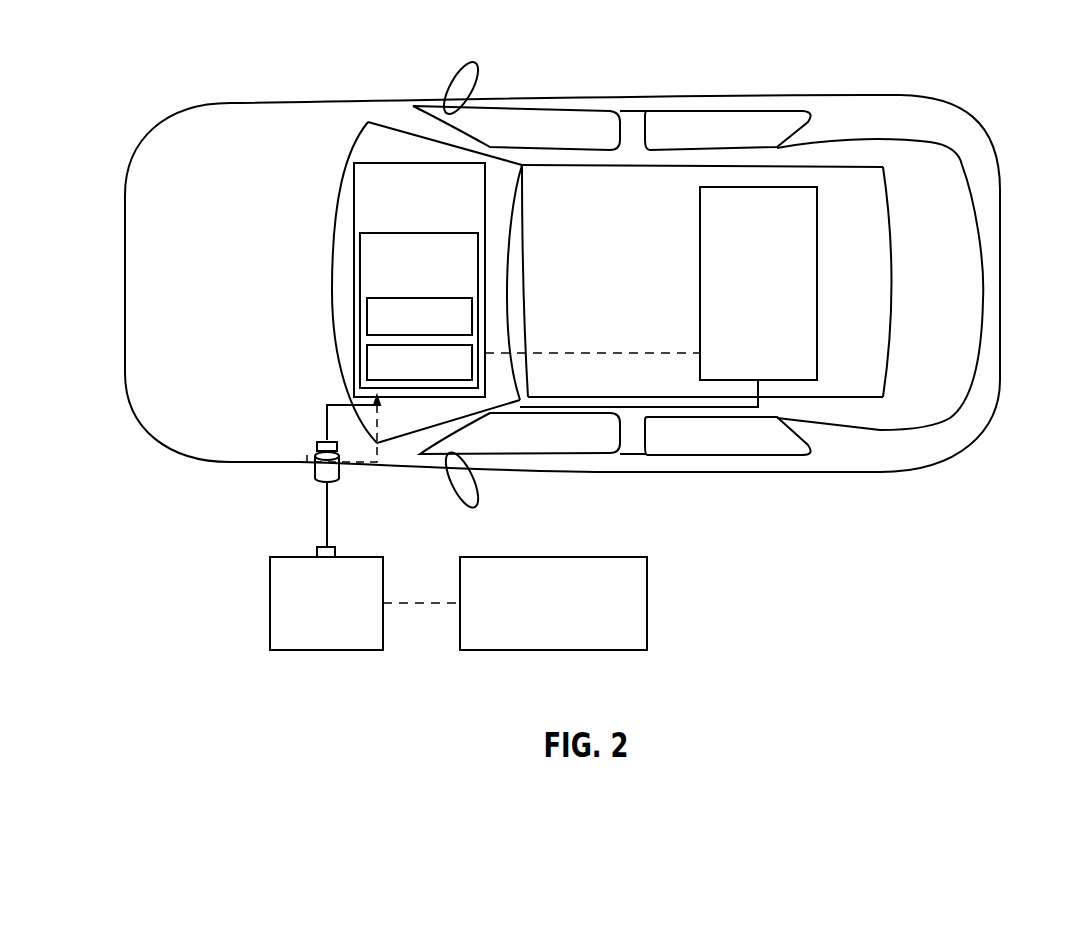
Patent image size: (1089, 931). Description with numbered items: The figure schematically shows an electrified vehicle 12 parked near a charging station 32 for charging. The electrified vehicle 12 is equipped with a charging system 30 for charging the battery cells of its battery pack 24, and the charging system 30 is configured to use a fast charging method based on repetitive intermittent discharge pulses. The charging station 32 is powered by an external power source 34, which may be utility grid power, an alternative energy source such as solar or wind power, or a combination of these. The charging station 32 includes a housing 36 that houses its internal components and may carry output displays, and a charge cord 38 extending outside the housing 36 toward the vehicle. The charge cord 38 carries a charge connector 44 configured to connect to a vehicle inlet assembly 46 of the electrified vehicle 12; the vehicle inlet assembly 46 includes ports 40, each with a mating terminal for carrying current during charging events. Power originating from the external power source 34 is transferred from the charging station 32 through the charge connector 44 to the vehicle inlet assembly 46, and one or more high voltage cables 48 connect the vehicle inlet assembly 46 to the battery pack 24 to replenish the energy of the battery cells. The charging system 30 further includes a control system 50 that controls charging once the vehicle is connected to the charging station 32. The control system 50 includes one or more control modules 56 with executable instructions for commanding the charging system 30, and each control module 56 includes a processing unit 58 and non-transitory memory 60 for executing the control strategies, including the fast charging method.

The electrified vehicle 12 is at (985, 124).
The battery pack 24 is at (700, 288).
The charging system 30 is at (300, 397).
The charging station 32 is at (327, 657).
The external power source 34 is at (647, 602).
The housing 36 is at (270, 603).
The charge cord 38 is at (326, 512).
The ports 40 is at (320, 444).
The charge connector 44 is at (313, 470).
The vehicle inlet assembly 46 is at (350, 463).
The high voltage cables 48 is at (690, 408).
The control system 50 is at (487, 172).
The control module 56 is at (480, 272).
The processing unit 58 is at (473, 317).
The non-transitory memory 60 is at (477, 372).